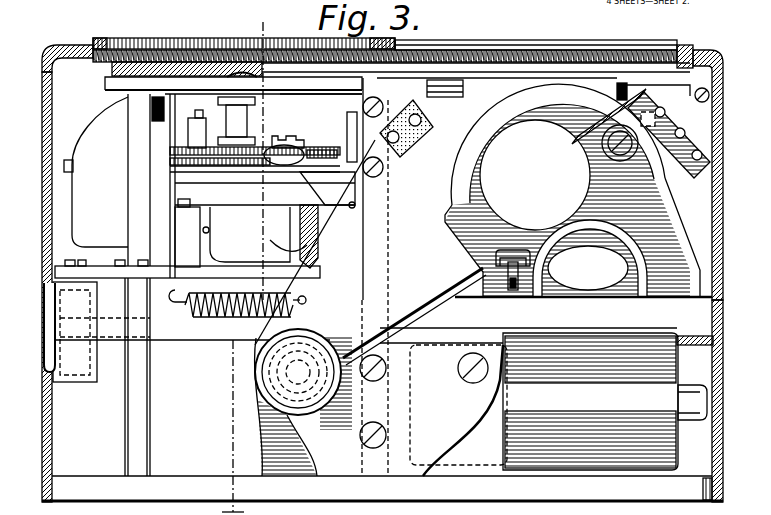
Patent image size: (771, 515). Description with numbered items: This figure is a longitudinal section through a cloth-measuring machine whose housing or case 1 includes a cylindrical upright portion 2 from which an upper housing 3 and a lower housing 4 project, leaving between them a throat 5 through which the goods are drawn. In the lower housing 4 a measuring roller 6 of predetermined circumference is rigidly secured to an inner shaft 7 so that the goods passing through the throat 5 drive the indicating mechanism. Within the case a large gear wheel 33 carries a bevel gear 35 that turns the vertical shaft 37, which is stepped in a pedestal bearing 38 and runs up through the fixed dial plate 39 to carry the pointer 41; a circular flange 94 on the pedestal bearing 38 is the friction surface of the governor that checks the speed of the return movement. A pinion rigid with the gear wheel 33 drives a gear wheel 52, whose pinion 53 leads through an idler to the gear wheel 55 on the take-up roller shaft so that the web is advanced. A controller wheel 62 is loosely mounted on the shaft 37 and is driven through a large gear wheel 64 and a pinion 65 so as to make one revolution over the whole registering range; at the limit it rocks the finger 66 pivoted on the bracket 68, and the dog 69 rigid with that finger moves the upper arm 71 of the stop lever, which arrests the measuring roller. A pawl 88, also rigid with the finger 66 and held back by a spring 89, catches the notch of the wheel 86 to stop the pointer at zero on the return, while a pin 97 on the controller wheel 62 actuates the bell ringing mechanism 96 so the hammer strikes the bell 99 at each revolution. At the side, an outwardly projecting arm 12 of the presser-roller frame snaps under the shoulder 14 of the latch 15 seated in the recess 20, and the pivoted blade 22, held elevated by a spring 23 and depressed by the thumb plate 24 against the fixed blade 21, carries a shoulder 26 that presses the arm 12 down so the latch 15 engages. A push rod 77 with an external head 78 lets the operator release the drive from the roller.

The housing or case 1 is at (72, 45).
The cylindrical upright portion 2 is at (43, 133).
The upper housing 3 is at (722, 188).
The lower housing 4 is at (720, 424).
The throat 5 is at (708, 318).
The measuring roller 6 is at (262, 26).
The inner shaft 7 is at (700, 400).
The outwardly projecting arm 12 is at (507, 290).
The shoulder 14 is at (510, 261).
The latch 15 is at (590, 263).
The recess or cup 20 is at (589, 236).
The fixed knife or blade 21 is at (433, 410).
The pivoted blade 22 is at (521, 224).
The spring 23 is at (232, 315).
The thumb plate 24 is at (606, 110).
The shoulder 26 is at (456, 197).
The large gear wheel 33 is at (337, 233).
The bevel gear 35 is at (265, 250).
The arbor or vertical shaft 37 is at (243, 72).
The pedestal bearing 38 is at (263, 186).
The fixed dial plate 39 is at (303, 83).
The hand or pointer 41 is at (297, 66).
The gear wheel 52 is at (349, 138).
The pinion 53 is at (398, 137).
The gear wheel 55 is at (358, 116).
The controller wheel 62 is at (288, 132).
The large gear wheel 64 is at (200, 178).
The pinion 65 is at (220, 174).
The dog or finger 66 is at (306, 150).
The bracket 68 is at (348, 207).
The dog or arm 69 is at (312, 191).
The upper arm 71 is at (355, 206).
The push rod 77 is at (170, 322).
The head 78 is at (45, 325).
The wheel 86 is at (204, 208).
The pawl 88 is at (255, 186).
The spring 89 is at (284, 155).
The circular flange 94 is at (206, 233).
The bell ringing mechanism 96 is at (191, 122).
The pin or dog 97 is at (219, 134).
The bell 99 is at (96, 172).